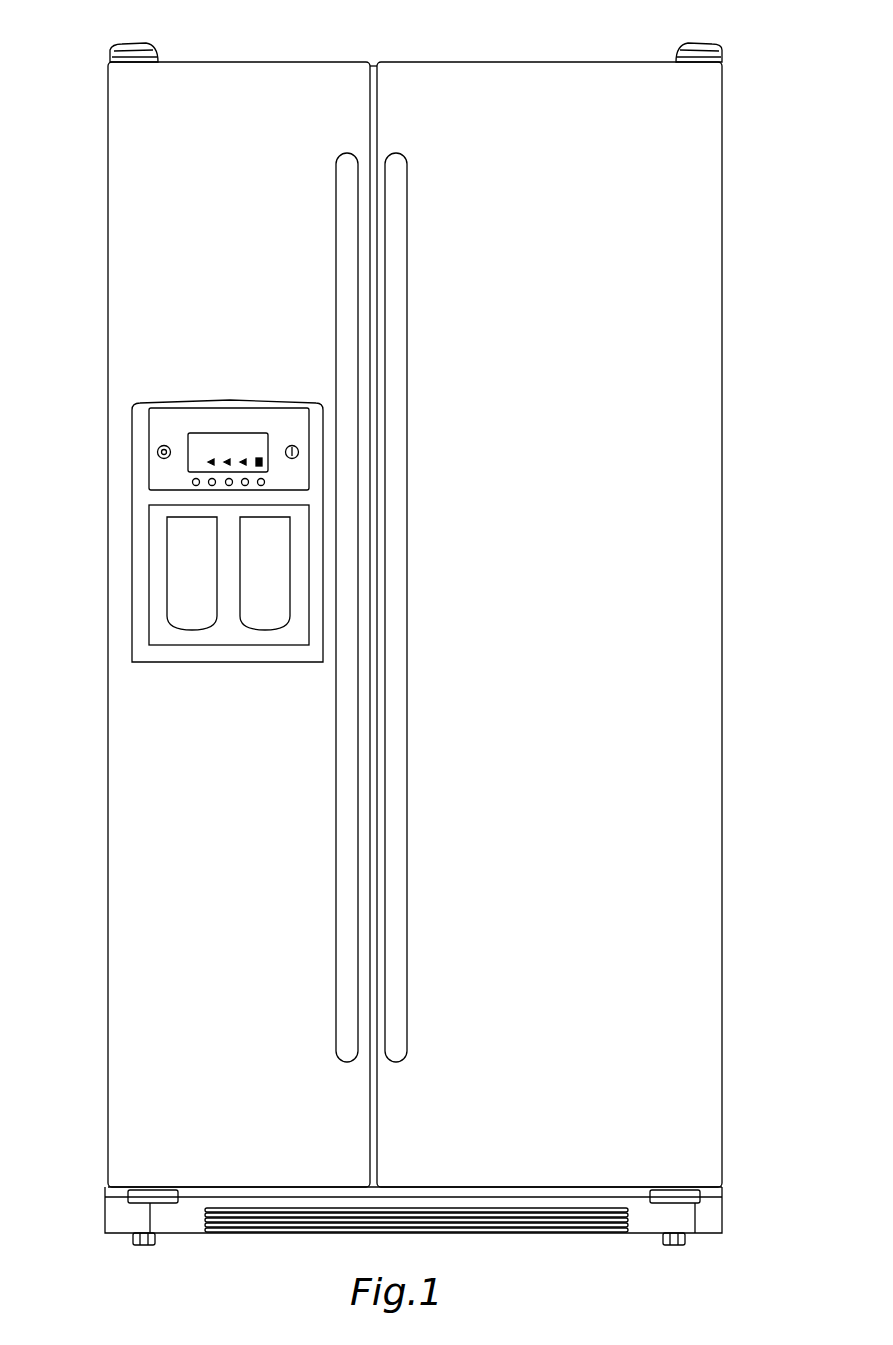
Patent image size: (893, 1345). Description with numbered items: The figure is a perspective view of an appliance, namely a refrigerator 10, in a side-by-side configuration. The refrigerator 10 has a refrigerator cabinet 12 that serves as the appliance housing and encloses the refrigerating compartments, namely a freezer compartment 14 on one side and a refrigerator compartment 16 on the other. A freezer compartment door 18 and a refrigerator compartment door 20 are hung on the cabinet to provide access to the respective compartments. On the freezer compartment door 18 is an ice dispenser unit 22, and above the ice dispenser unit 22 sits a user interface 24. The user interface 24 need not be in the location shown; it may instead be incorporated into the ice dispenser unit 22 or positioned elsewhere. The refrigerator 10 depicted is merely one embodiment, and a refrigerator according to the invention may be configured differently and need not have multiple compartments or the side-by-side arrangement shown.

The refrigerator 10 is at (533, 34).
The refrigerator cabinet 12 is at (638, 61).
The freezer compartment 14 is at (147, 133).
The refrigerator compartment 16 is at (688, 220).
The freezer compartment door 18 is at (148, 235).
The refrigerator compartment door 20 is at (688, 327).
The ice dispenser unit 22 is at (148, 549).
The user interface 24 is at (229, 401).